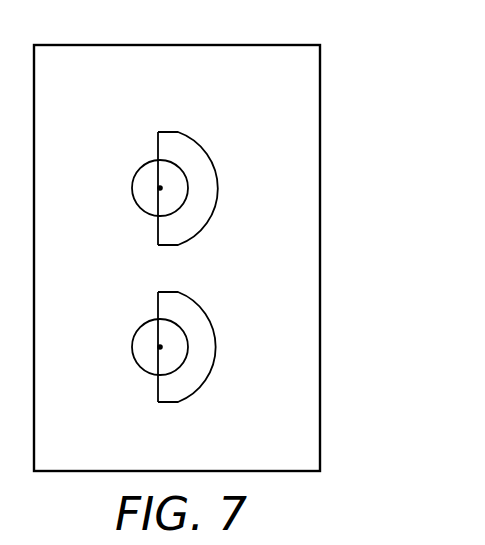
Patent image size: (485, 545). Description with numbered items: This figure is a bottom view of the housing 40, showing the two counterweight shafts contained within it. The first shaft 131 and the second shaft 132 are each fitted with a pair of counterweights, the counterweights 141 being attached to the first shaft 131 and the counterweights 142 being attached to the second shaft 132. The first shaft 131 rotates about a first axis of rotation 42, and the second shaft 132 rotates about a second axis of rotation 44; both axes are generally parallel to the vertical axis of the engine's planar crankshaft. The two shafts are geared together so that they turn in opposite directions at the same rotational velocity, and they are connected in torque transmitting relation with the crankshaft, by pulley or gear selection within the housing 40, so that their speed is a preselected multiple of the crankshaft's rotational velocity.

The housing 40 is at (308, 92).
The first axis of rotation 42 is at (160, 188).
The second axis of rotation 44 is at (160, 347).
The first shaft 131 is at (140, 208).
The second shaft 132 is at (150, 357).
The counterweights of the first shaft 141 is at (208, 173).
The counterweights of the second shaft 142 is at (202, 327).